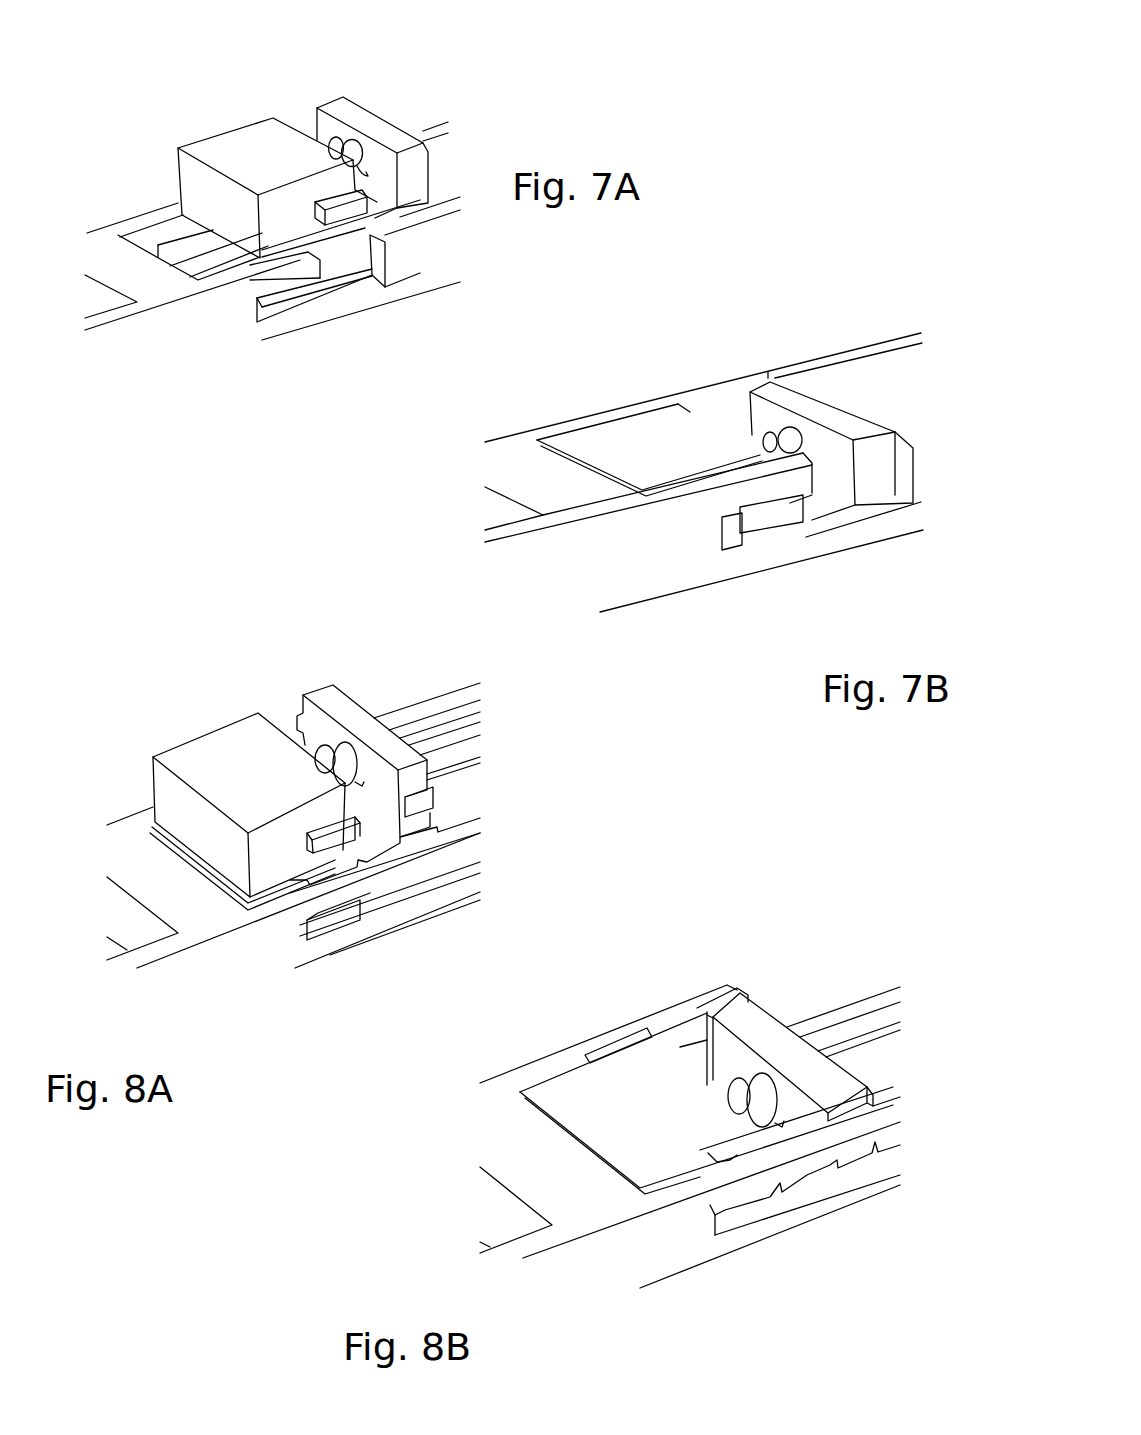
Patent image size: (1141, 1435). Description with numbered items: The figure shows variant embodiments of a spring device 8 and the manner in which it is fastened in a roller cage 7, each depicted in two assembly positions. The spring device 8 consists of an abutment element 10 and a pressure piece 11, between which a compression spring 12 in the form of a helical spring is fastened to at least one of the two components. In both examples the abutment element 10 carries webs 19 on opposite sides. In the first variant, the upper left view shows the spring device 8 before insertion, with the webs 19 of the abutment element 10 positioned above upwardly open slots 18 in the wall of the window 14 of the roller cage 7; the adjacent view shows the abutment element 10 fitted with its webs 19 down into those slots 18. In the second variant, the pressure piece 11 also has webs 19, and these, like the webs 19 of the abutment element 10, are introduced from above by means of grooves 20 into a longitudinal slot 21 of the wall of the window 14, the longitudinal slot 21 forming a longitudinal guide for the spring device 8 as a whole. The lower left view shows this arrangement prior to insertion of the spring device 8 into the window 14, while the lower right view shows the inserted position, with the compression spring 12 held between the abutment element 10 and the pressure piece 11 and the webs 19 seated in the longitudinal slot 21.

In FIG. 7A, the roller cage 7 is at (147, 283).
In FIG. 7B, the roller cage 7 is at (550, 480).
In FIG. 8A, the roller cage 7 is at (170, 885).
In FIG. 8B, the roller cage 7 is at (547, 1170).
In FIG. 7A, the spring device 8 is at (273, 103).
In FIG. 7B, the spring device 8 is at (718, 388).
In FIG. 8A, the spring device 8 is at (293, 678).
In FIG. 7A, the abutment element 10 is at (230, 155).
In FIG. 7B, the abutment element 10 is at (618, 445).
In FIG. 8A, the abutment element 10 is at (203, 753).
In FIG. 8B, the abutment element 10 is at (613, 1107).
In FIG. 7A, the pressure piece 11 is at (383, 125).
In FIG. 7B, the pressure piece 11 is at (824, 413).
In FIG. 8A, the pressure piece 11 is at (350, 710).
In FIG. 8B, the pressure piece 11 is at (795, 1057).
In FIG. 7A, the compression spring 12 is at (336, 140).
In FIG. 7B, the compression spring 12 is at (772, 432).
In FIG. 8A, the compression spring 12 is at (302, 747).
In FIG. 8B, the compression spring 12 is at (743, 1080).
In FIG. 7A, the window 14 is at (193, 263).
In FIG. 7B, the window 14 is at (877, 380).
In FIG. 8A, the window 14 is at (443, 813).
In FIG. 8B, the window 14 is at (855, 1062).
In FIG. 7A, the slots 18 is at (343, 265).
In FIG. 7B, the slots 18 is at (723, 543).
In FIG. 7A, the webs 19 is at (352, 206).
In FIG. 7B, the webs 19 is at (782, 518).
In FIG. 8A, the webs 19 is at (327, 838).
In FIG. 8B, the webs 19 is at (755, 1197).
In FIG. 8A, the grooves 20 is at (415, 838).
In FIG. 8B, the grooves 20 is at (713, 1005).
In FIG. 8A, the longitudinal slot 21 is at (428, 882).
In FIG. 8B, the longitudinal slot 21 is at (807, 1182).